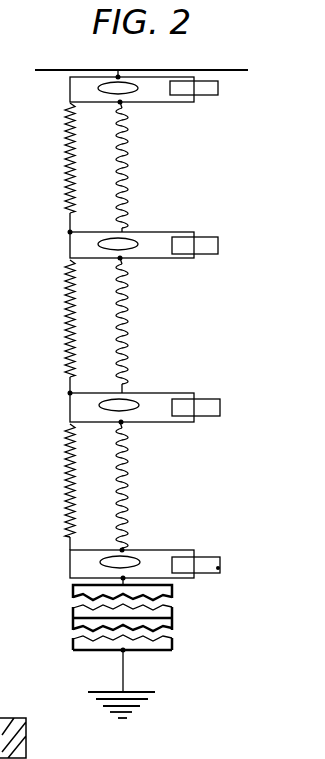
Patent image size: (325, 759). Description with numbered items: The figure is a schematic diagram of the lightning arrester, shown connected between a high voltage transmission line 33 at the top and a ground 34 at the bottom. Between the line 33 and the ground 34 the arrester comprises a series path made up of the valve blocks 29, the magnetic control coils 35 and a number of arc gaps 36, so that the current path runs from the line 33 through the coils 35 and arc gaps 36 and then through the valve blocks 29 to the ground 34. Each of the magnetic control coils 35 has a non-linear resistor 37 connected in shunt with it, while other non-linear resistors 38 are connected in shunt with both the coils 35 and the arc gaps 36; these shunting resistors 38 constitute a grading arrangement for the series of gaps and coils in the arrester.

The valve blocks 29 is at (172, 640).
The high voltage transmission line 33 is at (73, 70).
The ground 34 is at (137, 708).
The magnetic control coils 35 is at (100, 89).
The arc gaps 36 is at (130, 176).
The non-linear resistors 37 is at (207, 93).
The non-linear resistors 38 is at (65, 155).